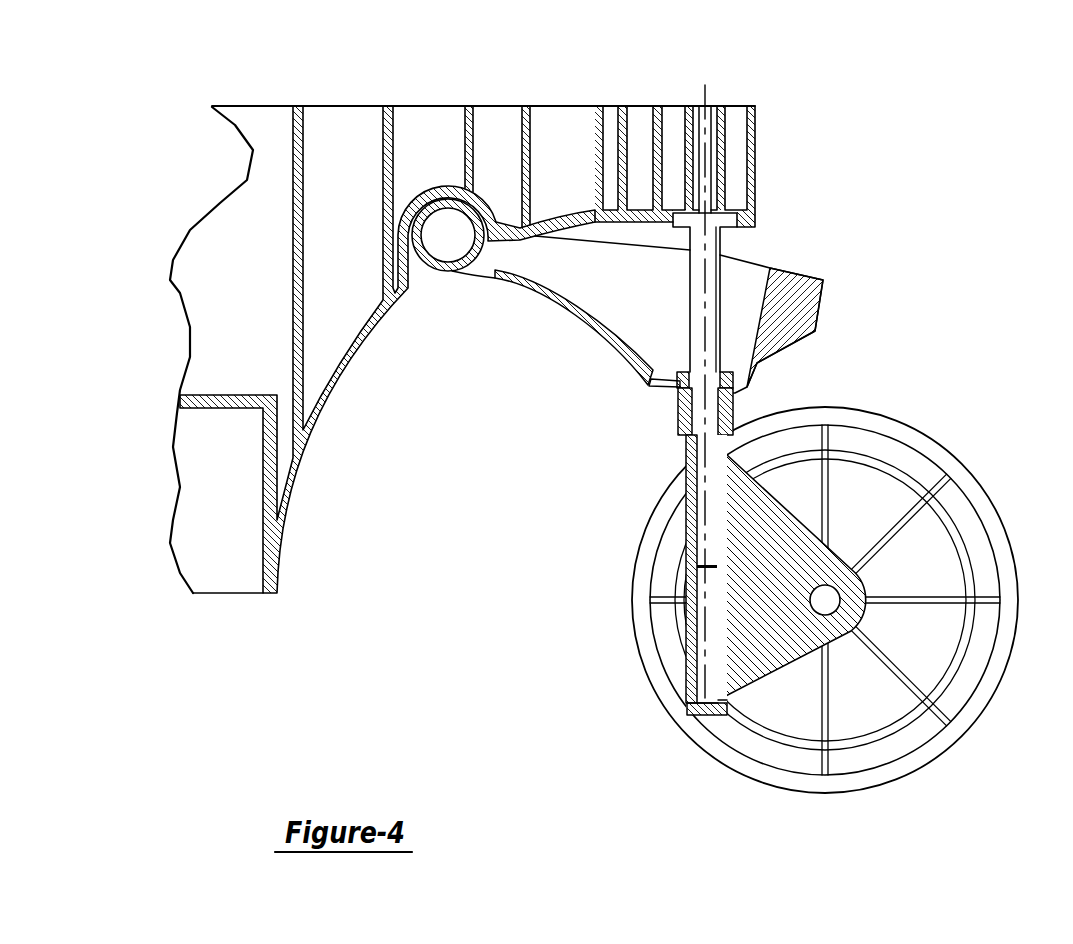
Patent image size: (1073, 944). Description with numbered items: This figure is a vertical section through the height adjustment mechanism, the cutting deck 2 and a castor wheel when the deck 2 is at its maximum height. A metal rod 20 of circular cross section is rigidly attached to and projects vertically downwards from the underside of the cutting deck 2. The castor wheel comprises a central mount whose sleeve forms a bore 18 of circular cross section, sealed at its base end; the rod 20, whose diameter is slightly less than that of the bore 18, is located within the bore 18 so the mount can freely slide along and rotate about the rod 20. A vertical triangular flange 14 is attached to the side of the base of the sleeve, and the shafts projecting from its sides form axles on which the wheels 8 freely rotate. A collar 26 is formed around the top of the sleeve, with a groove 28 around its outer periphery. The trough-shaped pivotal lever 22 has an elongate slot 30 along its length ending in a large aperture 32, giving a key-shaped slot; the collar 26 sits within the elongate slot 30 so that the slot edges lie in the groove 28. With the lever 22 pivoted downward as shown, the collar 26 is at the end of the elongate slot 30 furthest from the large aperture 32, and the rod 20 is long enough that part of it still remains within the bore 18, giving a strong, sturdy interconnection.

The cutting deck 2 is at (755, 196).
The wheel 8 is at (958, 698).
The vertical triangular flange 14 is at (767, 638).
The bore 18 is at (700, 635).
The metal rod 20 is at (702, 535).
The pivotal lever 22 is at (535, 290).
The collar 26 is at (682, 436).
The groove 28 is at (680, 398).
The elongate slot 30 is at (680, 383).
The large aperture 32 is at (655, 368).